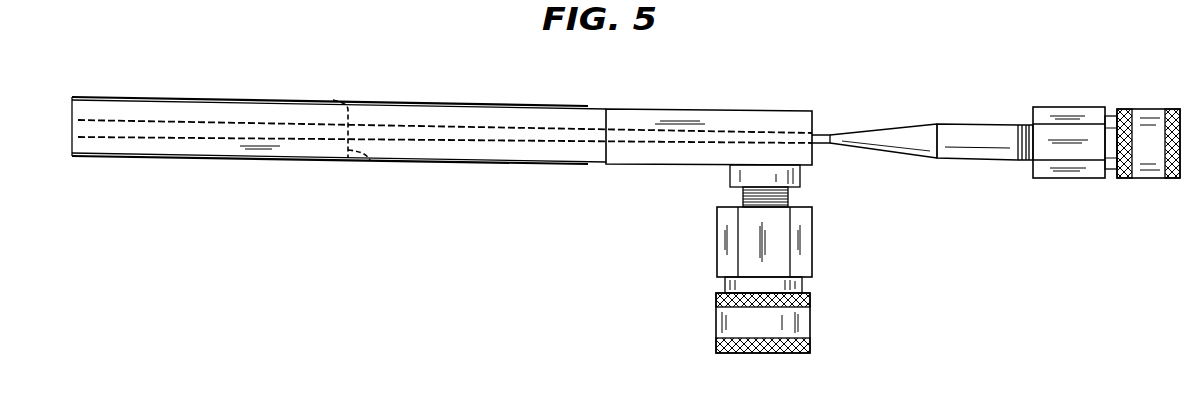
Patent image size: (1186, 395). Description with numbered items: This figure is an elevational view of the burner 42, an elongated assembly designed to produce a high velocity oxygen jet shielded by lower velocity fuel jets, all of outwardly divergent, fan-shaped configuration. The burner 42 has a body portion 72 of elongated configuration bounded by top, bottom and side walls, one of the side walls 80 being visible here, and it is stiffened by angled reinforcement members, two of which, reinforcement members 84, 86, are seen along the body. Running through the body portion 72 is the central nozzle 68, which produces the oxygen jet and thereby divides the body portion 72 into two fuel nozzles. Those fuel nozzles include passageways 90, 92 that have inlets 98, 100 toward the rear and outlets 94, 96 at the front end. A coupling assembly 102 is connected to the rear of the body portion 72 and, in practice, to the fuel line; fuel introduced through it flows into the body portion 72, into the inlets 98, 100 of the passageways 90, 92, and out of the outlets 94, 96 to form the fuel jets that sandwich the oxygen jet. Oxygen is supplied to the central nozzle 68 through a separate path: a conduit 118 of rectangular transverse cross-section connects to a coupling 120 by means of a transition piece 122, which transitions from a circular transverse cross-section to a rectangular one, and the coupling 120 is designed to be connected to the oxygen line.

The burner 42 is at (757, 70).
The central nozzle 68 is at (236, 97).
The body portion 72 is at (417, 124).
The side wall 80 is at (200, 146).
The angled reinforcement member 84 is at (378, 100).
The angled reinforcement member 86 is at (317, 161).
The passageway 90 is at (188, 101).
The passageway 92 is at (152, 160).
The outlet 94 is at (72, 100).
The outlet 96 is at (72, 154).
The inlet 98 is at (334, 100).
The inlet 100 is at (370, 160).
The coupling assembly 102 is at (685, 247).
The conduit 118 is at (822, 140).
The coupling 120 is at (1077, 92).
The transition piece 122 is at (886, 127).